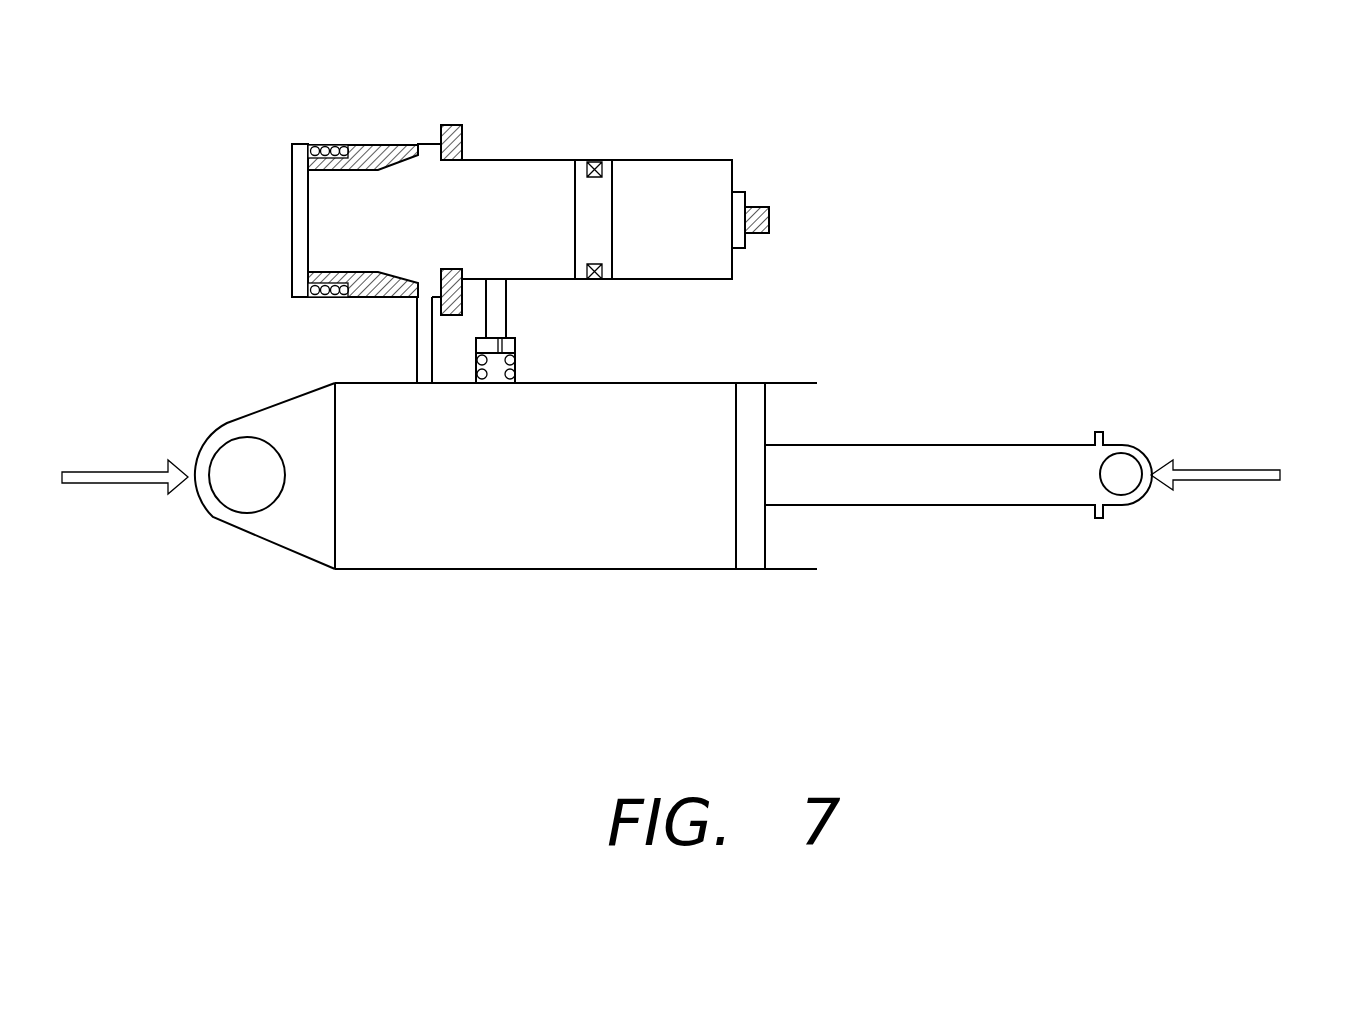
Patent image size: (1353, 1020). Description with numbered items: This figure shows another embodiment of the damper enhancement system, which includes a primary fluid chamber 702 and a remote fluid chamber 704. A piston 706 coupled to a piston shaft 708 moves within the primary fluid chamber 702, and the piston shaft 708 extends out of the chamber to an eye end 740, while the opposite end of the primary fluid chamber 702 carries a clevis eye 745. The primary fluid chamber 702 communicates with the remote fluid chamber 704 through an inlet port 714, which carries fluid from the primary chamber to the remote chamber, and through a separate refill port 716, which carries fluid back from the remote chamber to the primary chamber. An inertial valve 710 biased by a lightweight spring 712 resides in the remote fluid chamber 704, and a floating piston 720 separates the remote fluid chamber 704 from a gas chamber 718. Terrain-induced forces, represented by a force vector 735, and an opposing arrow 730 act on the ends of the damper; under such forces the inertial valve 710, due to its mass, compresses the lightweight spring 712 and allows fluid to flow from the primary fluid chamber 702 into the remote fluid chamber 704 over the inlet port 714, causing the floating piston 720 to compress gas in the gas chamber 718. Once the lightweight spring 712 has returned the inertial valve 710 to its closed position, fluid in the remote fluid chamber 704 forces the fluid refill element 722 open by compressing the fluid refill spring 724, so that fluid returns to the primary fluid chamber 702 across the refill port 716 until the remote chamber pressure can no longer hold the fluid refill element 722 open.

The primary fluid chamber 702 is at (532, 534).
The remote fluid chamber 704 is at (493, 175).
The piston 706 is at (760, 534).
The piston shaft 708 is at (967, 483).
The inertial valve 710 is at (386, 145).
The lightweight spring 712 is at (325, 143).
The inlet port 714 is at (423, 350).
The refill port 716 is at (512, 310).
The gas chamber 718 is at (672, 173).
The floating piston 720 is at (608, 178).
The fluid refill element 722 is at (515, 345).
The fluid refill spring 724 is at (475, 383).
The force arrow 730 is at (1250, 476).
The force vector 735 is at (125, 493).
The rod eye 740 is at (1121, 478).
The clevis eye 745 is at (240, 462).